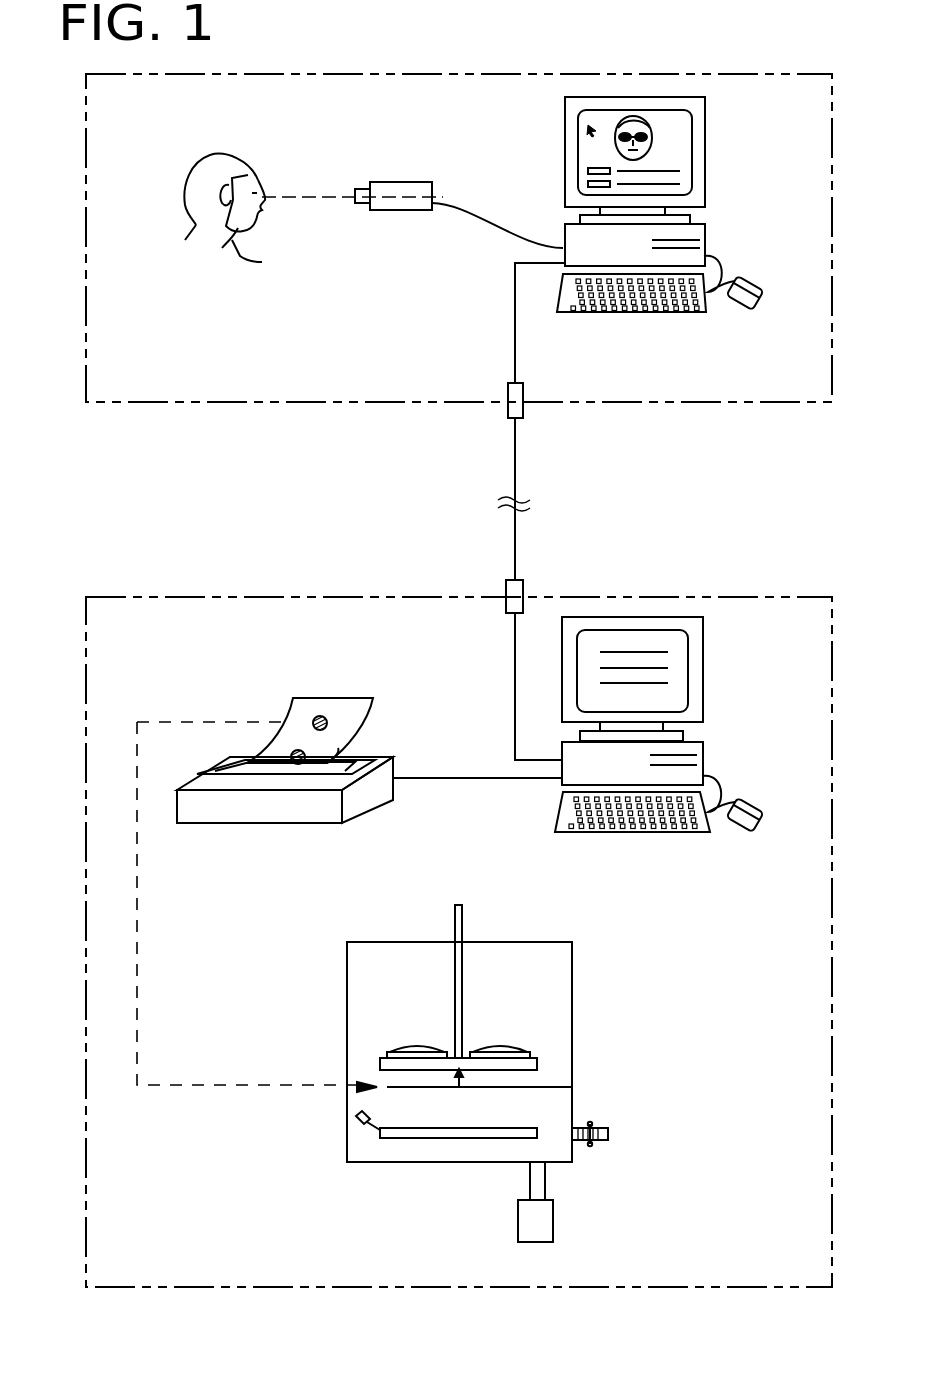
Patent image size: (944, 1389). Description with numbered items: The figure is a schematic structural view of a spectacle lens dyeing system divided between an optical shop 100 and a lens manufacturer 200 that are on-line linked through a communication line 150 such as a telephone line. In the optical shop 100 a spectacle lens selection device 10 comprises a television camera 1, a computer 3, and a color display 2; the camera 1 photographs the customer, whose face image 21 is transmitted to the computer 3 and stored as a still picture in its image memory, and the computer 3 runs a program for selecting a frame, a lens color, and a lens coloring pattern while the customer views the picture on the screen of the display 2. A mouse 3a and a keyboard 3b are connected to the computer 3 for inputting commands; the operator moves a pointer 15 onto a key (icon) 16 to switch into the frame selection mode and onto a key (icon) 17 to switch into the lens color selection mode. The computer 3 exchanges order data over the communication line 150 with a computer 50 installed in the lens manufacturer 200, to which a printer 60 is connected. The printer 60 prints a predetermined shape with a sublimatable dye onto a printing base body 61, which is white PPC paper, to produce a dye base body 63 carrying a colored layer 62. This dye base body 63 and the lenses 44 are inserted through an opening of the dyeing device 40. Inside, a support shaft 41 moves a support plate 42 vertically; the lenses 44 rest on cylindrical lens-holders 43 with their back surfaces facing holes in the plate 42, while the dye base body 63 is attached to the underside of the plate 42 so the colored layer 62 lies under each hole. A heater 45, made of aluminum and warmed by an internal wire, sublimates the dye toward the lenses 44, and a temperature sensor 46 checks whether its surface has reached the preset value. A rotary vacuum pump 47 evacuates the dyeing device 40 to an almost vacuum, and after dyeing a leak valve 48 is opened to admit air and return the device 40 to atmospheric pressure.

The optical shop 100 is at (470, 74).
The lens manufacturer 200 is at (648, 597).
The communication line 150 is at (516, 457).
The spectacle lens selection device 10 is at (486, 160).
The image of the face of the customer 21 is at (260, 233).
The television camera 1 is at (403, 206).
The color display 2 is at (677, 140).
The computer 3 is at (700, 231).
The mouse 3a is at (752, 277).
The keyboard 3b is at (706, 313).
The pointer 15 is at (587, 128).
The key (icon) 16 is at (588, 171).
The key (icon) 17 is at (588, 185).
The computer 50 is at (703, 750).
The printer 60 is at (227, 810).
The printing base body 61 is at (352, 708).
The colored layer 62 is at (310, 718).
The dye base body 63 is at (392, 728).
The dyeing device 40 is at (572, 978).
The support shaft 41 is at (462, 922).
The support plate 42 is at (537, 1065).
The cylindrical lens-holder 43 is at (386, 1058).
The lenses 44 is at (400, 1048).
The heater 45 is at (450, 1139).
The temperature sensor 46 is at (357, 1126).
The rotary vacuum pump 47 is at (553, 1222).
The leak valve 48 is at (590, 1146).